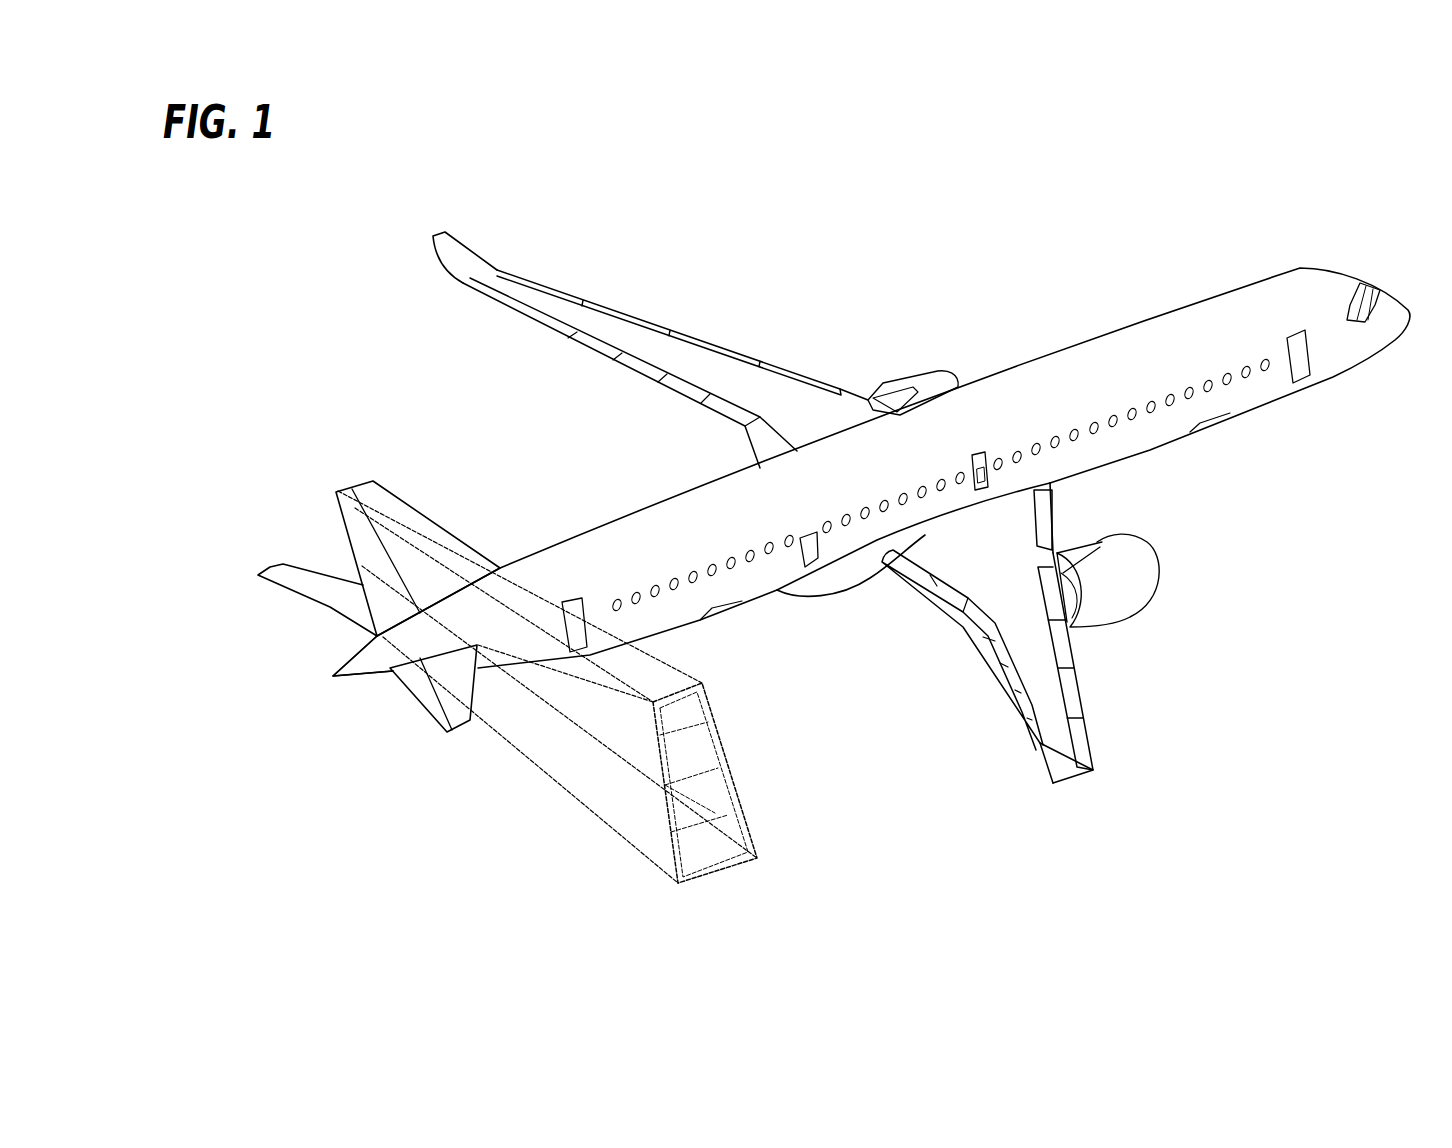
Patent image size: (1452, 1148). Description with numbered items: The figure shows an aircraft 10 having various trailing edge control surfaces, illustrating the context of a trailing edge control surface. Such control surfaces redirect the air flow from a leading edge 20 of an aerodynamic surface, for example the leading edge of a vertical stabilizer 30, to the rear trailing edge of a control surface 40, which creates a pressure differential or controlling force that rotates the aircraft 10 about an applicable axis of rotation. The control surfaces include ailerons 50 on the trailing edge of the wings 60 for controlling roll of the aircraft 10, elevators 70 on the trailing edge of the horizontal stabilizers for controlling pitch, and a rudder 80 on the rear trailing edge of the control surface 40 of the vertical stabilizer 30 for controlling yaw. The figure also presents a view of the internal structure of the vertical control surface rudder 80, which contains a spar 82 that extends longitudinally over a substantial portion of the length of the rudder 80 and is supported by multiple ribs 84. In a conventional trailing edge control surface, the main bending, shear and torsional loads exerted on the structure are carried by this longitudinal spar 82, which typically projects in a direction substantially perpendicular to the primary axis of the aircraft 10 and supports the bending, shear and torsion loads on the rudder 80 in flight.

The aircraft 10 is at (1017, 213).
The leading edge 20 is at (417, 523).
The vertical stabilizer 30 is at (397, 495).
The control surface 40 is at (340, 523).
The ailerons 50 is at (510, 302).
The wings 60 is at (690, 353).
The elevators 70 is at (303, 598).
The rudder 80 is at (377, 565).
The spar 82 is at (710, 742).
The ribs 84 is at (717, 813).